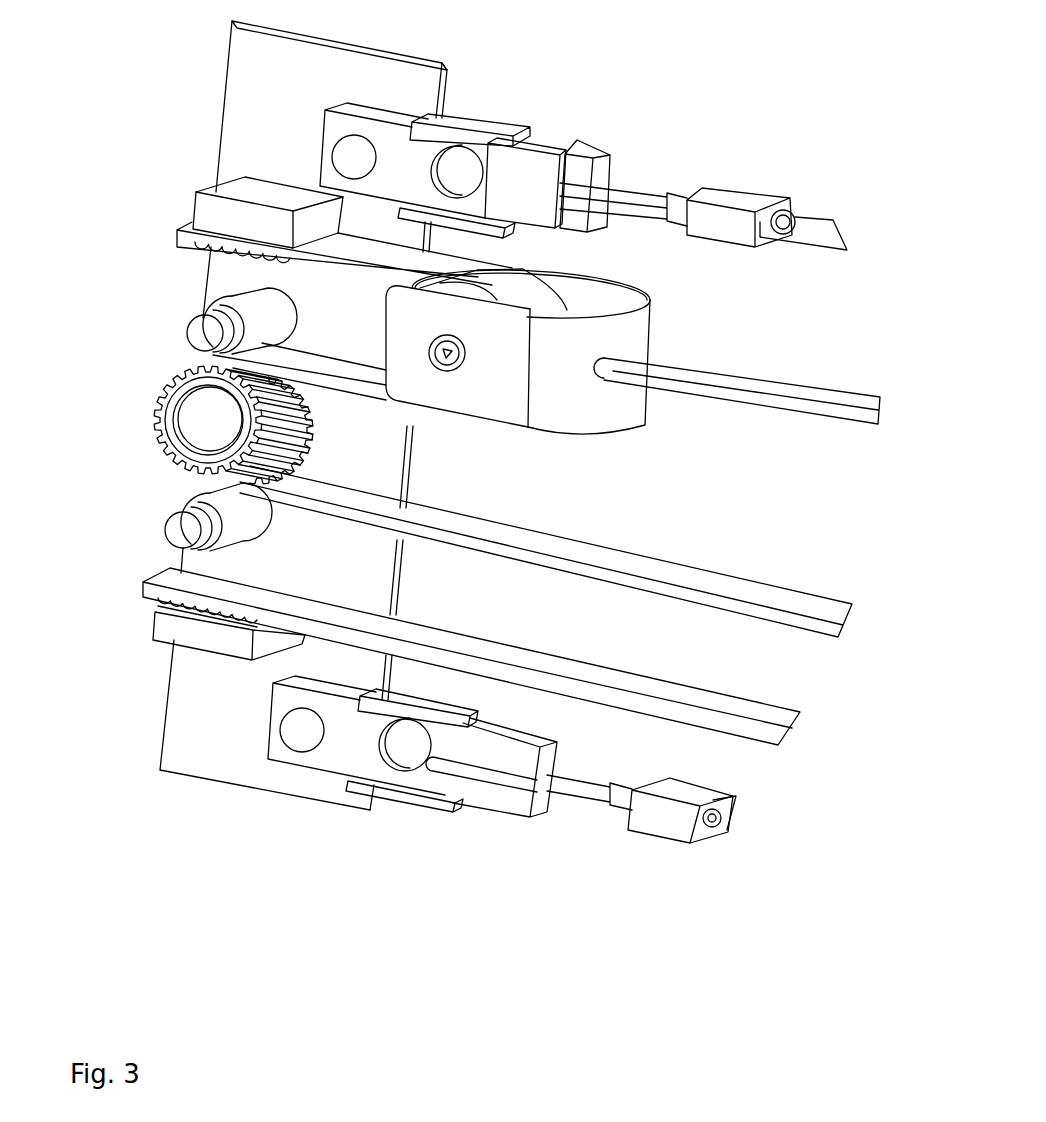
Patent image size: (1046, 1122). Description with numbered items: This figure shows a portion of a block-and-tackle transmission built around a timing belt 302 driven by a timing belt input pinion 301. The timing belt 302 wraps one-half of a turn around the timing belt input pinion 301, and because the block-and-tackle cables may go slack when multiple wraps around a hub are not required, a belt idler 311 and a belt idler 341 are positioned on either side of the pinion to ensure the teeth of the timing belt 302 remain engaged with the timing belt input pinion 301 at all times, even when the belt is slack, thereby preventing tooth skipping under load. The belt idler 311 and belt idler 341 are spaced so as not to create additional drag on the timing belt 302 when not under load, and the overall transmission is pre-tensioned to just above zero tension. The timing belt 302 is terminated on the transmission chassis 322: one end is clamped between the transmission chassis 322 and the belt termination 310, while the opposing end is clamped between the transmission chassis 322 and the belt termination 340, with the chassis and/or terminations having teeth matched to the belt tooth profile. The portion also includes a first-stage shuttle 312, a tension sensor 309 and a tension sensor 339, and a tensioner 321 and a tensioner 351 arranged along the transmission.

The timing belt input pinion 301 is at (183, 393).
The timing belt 302 is at (722, 596).
The tension sensor 309 is at (408, 163).
The belt termination 310 is at (212, 216).
The belt idler 311 is at (198, 342).
The stage-1 shuttle 312 is at (552, 392).
The tensioner 321 is at (712, 195).
The transmission chassis 322 is at (275, 102).
The tension sensor 339 is at (344, 745).
The belt termination 340 is at (173, 635).
The belt idler 341 is at (183, 544).
The tensioner 351 is at (660, 827).